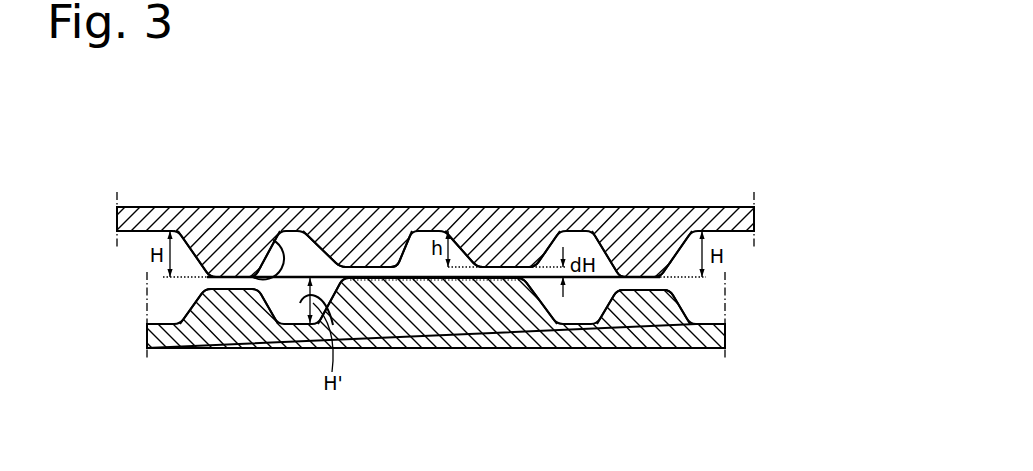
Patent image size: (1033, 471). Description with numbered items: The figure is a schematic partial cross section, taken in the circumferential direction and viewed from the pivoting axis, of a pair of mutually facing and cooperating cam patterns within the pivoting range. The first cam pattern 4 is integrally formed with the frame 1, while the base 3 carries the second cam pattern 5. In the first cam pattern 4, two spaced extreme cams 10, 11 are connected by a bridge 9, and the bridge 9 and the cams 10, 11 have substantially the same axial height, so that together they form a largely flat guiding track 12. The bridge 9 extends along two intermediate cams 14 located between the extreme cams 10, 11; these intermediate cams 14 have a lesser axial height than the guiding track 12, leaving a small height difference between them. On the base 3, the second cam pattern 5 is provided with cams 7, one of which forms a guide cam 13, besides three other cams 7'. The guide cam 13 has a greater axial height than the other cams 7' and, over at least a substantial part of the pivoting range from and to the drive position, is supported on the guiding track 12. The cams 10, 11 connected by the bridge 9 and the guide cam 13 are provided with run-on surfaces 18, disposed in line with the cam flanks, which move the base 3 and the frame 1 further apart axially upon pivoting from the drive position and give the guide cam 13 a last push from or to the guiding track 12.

The frame 1 is at (772, 250).
The base 3 is at (745, 307).
The first cam pattern 4 is at (680, 197).
The second cam pattern 5 is at (678, 366).
The cams 7 is at (436, 372).
The other cams 7' is at (435, 349).
The bridge 9 is at (308, 276).
The cam 10 is at (230, 258).
The cam 11 is at (642, 257).
The guiding track 12 is at (292, 278).
The guide cam 13 is at (435, 290).
The intermediate cams 14 is at (365, 260).
The run-on surfaces 18 is at (253, 275).